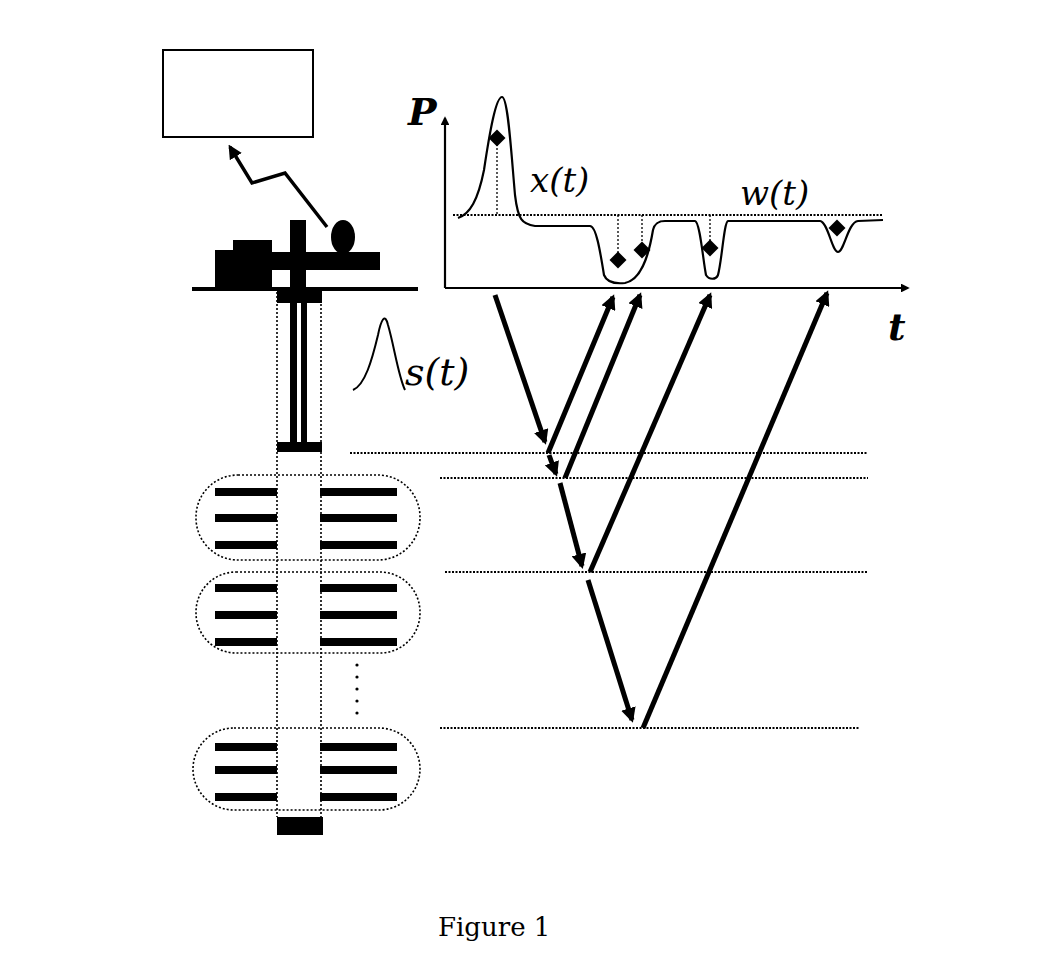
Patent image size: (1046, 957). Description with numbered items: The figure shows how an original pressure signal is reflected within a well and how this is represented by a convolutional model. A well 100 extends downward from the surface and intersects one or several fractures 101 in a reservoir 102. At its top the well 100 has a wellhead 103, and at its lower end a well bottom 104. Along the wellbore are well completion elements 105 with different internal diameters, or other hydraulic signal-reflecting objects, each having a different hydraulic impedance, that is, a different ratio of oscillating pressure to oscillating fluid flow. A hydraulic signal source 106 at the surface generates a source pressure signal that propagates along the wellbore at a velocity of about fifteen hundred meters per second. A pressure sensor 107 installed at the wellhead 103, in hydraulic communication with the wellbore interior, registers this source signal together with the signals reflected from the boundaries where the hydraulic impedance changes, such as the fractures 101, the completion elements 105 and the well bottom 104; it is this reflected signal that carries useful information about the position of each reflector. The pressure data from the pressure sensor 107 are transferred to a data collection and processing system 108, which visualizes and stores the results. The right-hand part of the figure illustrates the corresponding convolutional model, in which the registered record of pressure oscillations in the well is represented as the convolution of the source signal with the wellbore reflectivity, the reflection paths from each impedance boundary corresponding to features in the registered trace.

The well 100 is at (273, 357).
The fractures 101 is at (192, 597).
The reservoir 102 is at (807, 645).
The wellhead 103 is at (277, 295).
The well bottom 104 is at (270, 842).
The well completion elements 105 is at (300, 445).
The hydraulic signal source 106 is at (230, 240).
The pressure sensor 107 is at (347, 212).
The data collection and processing system 108 is at (245, 115).